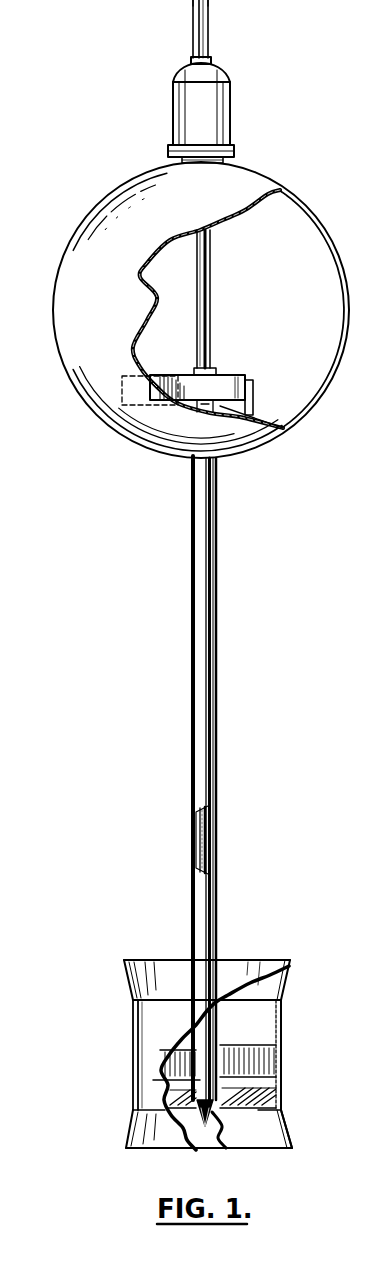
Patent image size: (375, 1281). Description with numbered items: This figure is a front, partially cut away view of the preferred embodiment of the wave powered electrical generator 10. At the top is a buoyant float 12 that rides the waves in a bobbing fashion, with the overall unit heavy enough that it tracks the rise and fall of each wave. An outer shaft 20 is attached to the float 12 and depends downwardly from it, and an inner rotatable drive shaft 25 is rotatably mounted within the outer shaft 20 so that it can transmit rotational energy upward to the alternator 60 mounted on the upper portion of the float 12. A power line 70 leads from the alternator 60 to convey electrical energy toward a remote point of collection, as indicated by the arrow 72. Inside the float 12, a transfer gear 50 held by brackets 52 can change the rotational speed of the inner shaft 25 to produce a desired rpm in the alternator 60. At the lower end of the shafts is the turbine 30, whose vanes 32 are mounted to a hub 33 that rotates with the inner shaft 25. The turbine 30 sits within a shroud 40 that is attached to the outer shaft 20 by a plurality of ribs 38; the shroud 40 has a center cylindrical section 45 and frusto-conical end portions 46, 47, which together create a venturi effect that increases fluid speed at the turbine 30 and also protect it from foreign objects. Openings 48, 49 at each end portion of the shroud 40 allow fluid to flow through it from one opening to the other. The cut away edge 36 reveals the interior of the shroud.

The wave powered electrical generator 10 is at (278, 162).
The buoyant float 12 is at (335, 247).
The outer shaft 20 is at (218, 769).
The inner rotatable drive shaft 25 is at (208, 298).
The turbine 30 is at (270, 1147).
The vanes 32 is at (285, 1098).
The hub 33 is at (197, 1140).
The cutaway edge 36 is at (230, 1146).
The ribs 38 is at (268, 1055).
The shroud 40 is at (131, 1045).
The center cylindrical section 45 is at (288, 1022).
The frusto-conical end portion 46 is at (128, 985).
The frusto-conical end portion 47 is at (128, 1128).
The opening 48 is at (156, 958).
The opening 49 is at (148, 1150).
The transfer gear 50 is at (226, 376).
The brackets 52 is at (253, 405).
The alternator 60 is at (215, 125).
The power line 70 is at (198, 38).
The arrow 72 is at (182, 0).